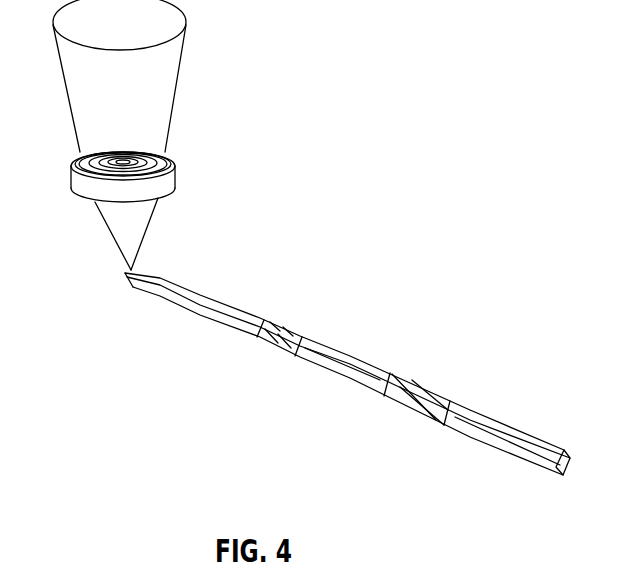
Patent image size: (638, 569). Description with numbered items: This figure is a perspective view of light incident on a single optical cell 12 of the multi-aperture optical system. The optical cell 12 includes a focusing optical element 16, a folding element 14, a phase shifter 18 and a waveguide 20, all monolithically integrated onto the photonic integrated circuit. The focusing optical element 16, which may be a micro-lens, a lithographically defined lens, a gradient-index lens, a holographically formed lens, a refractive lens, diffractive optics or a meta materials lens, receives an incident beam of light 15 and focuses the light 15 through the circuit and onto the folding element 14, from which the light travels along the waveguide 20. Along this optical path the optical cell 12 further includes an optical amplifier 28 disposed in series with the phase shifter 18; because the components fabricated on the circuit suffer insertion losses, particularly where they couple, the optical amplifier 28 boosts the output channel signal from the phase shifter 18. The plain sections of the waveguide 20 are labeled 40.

The optical cell 12 is at (369, 183).
The folding element 14 is at (124, 275).
The incident beam of light 15 is at (177, 102).
The focusing optical element 16 is at (177, 178).
The phase shifter 18 is at (277, 350).
The waveguide 20 is at (185, 311).
The optical amplifier 28 is at (415, 411).
The untreated bar section 40 is at (343, 380).